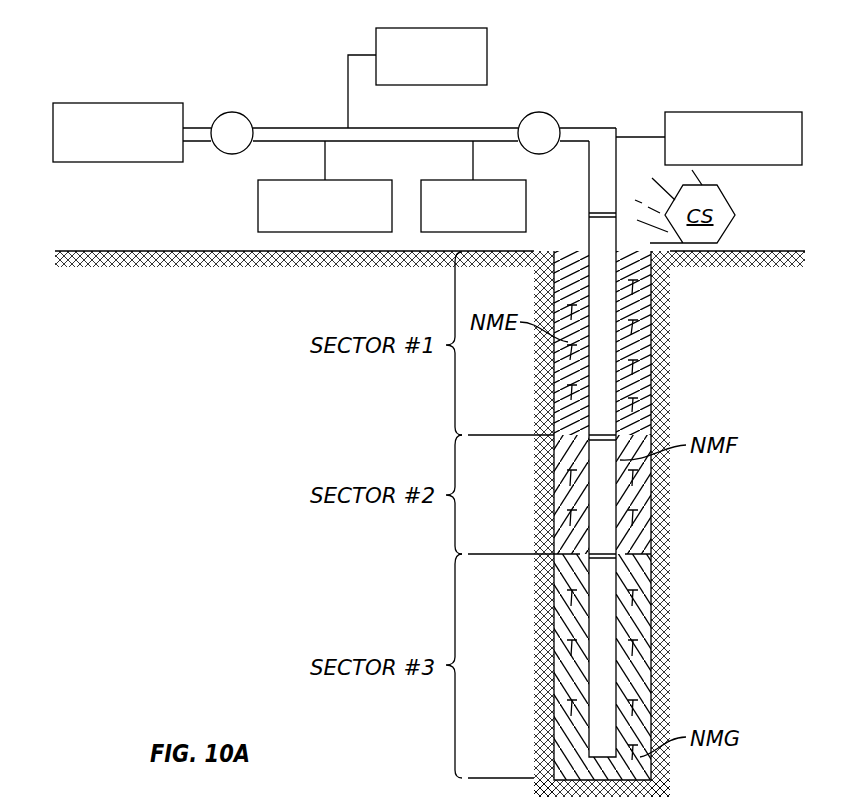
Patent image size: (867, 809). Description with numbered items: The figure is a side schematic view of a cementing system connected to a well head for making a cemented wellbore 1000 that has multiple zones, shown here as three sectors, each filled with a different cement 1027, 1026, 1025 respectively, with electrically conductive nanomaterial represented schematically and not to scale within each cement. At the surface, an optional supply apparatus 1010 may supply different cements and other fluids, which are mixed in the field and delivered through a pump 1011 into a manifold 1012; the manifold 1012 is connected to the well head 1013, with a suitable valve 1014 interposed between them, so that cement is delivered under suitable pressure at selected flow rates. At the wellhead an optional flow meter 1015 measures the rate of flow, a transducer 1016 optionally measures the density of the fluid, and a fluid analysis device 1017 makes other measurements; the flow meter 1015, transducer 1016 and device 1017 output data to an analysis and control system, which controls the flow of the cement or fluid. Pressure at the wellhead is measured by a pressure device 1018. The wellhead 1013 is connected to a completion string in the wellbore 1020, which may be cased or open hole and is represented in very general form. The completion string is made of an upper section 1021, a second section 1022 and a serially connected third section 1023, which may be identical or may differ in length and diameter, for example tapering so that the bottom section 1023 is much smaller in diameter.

The wellbore 1000 is at (388, 405).
The supply apparatus 1010 is at (118, 163).
The pump 1011 is at (232, 112).
The manifold 1012 is at (302, 127).
The well head 1013 is at (608, 128).
The valve 1014 is at (540, 112).
The flow meter 1015 is at (258, 202).
The transducer 1016 is at (438, 180).
The fluid analysis device 1017 is at (487, 42).
The pressure device 1018 is at (738, 112).
The wellbore 1020 is at (656, 311).
The upper section 1021 is at (620, 366).
The second section 1022 is at (606, 500).
The third section 1023 is at (604, 680).
The cement 1025 is at (632, 718).
The cement 1026 is at (640, 532).
The cement 1027 is at (620, 396).